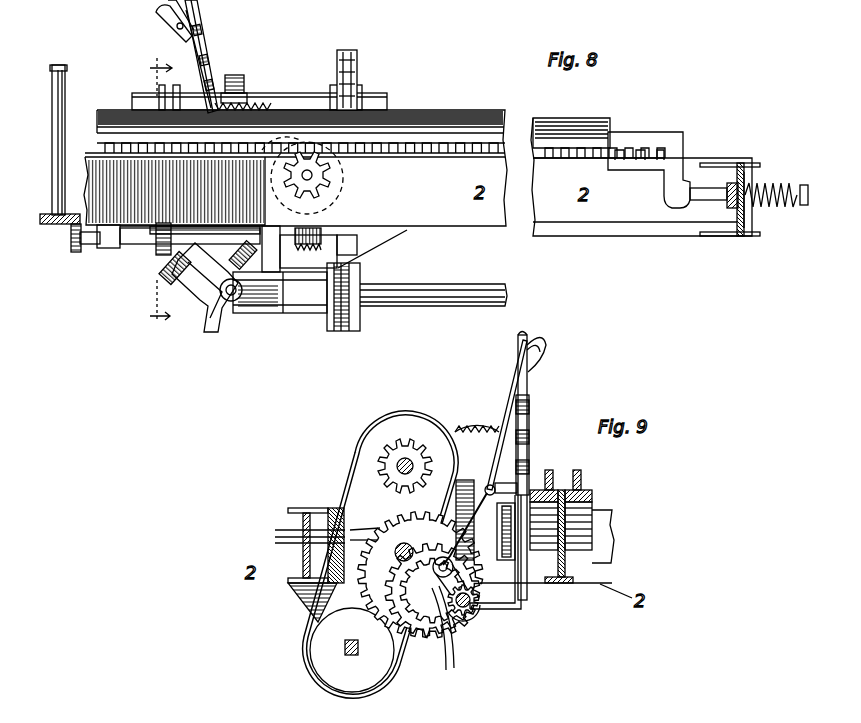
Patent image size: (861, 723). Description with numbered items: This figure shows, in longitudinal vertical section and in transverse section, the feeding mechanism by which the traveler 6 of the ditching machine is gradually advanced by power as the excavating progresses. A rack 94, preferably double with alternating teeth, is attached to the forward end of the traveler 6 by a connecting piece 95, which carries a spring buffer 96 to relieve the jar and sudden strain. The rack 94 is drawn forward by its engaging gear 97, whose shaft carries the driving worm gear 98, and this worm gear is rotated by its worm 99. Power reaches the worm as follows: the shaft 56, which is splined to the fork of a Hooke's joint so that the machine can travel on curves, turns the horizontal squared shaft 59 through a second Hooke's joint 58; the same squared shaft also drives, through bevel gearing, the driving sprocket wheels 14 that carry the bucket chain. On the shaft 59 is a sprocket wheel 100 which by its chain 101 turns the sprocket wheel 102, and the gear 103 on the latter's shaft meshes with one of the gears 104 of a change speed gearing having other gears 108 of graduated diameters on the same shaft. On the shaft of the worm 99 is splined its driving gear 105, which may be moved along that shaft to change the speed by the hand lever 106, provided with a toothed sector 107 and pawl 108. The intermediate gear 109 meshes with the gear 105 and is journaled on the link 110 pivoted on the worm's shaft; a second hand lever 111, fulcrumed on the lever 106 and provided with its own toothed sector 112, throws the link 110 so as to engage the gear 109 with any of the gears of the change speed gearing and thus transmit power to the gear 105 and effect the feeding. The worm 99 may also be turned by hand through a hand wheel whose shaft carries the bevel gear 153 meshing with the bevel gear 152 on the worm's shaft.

In FIG. 8, the traveler 6 is at (748, 220).
In FIG. 8, the driving sprocket wheels 14 is at (157, 196).
In FIG. 8, the shaft 56 is at (163, 262).
In FIG. 8, the second Hooke's joint 58 is at (228, 308).
In FIG. 8, the horizontal squared shaft 59 is at (430, 298).
In FIG. 9, the horizontal squared shaft 59 is at (345, 648).
In FIG. 8, the rack 94 is at (425, 147).
In FIG. 9, the rack 94 is at (560, 500).
In FIG. 8, the connecting piece 95 is at (684, 150).
In FIG. 8, the spring buffer 96 is at (762, 190).
In FIG. 8, the engaging gear 97 is at (360, 206).
In FIG. 9, the engaging gear 97 is at (585, 533).
In FIG. 8, the driving worm gear 98 is at (174, 191).
In FIG. 9, the driving worm gear 98 is at (466, 482).
In FIG. 8, the worm 99 is at (291, 320).
In FIG. 9, the worm 99 is at (478, 609).
In FIG. 8, the sprocket wheel 100 is at (345, 330).
In FIG. 9, the sprocket wheel 100 is at (352, 650).
In FIG. 9, the chain 101 is at (348, 494).
In FIG. 8, the sprocket wheel 102 is at (358, 55).
In FIG. 9, the sprocket wheel 102 is at (417, 440).
In FIG. 8, the gear 103 is at (240, 77).
In FIG. 9, the gear 103 is at (397, 452).
In FIG. 9, the gears of change speed gearing 104 is at (382, 492).
In FIG. 9, the driving gear 105 is at (470, 612).
In FIG. 8, the hand lever 106 is at (164, 12).
In FIG. 9, the hand lever 106 is at (518, 337).
In FIG. 8, the toothed sector 107 is at (258, 98).
In FIG. 9, the toothed sector 107 is at (530, 470).
In FIG. 9, the pawl 108 is at (300, 530).
In FIG. 8, the intermediate gear 109 is at (158, 250).
In FIG. 9, the intermediate gear 109 is at (436, 618).
In FIG. 9, the link 110 is at (443, 642).
In FIG. 8, the hand lever 111 is at (209, 62).
In FIG. 9, the hand lever 111 is at (512, 406).
In FIG. 9, the toothed sector 112 is at (472, 426).
In FIG. 8, the bevel gear 152 is at (76, 252).
In FIG. 8, the bevel gear 153 is at (66, 224).